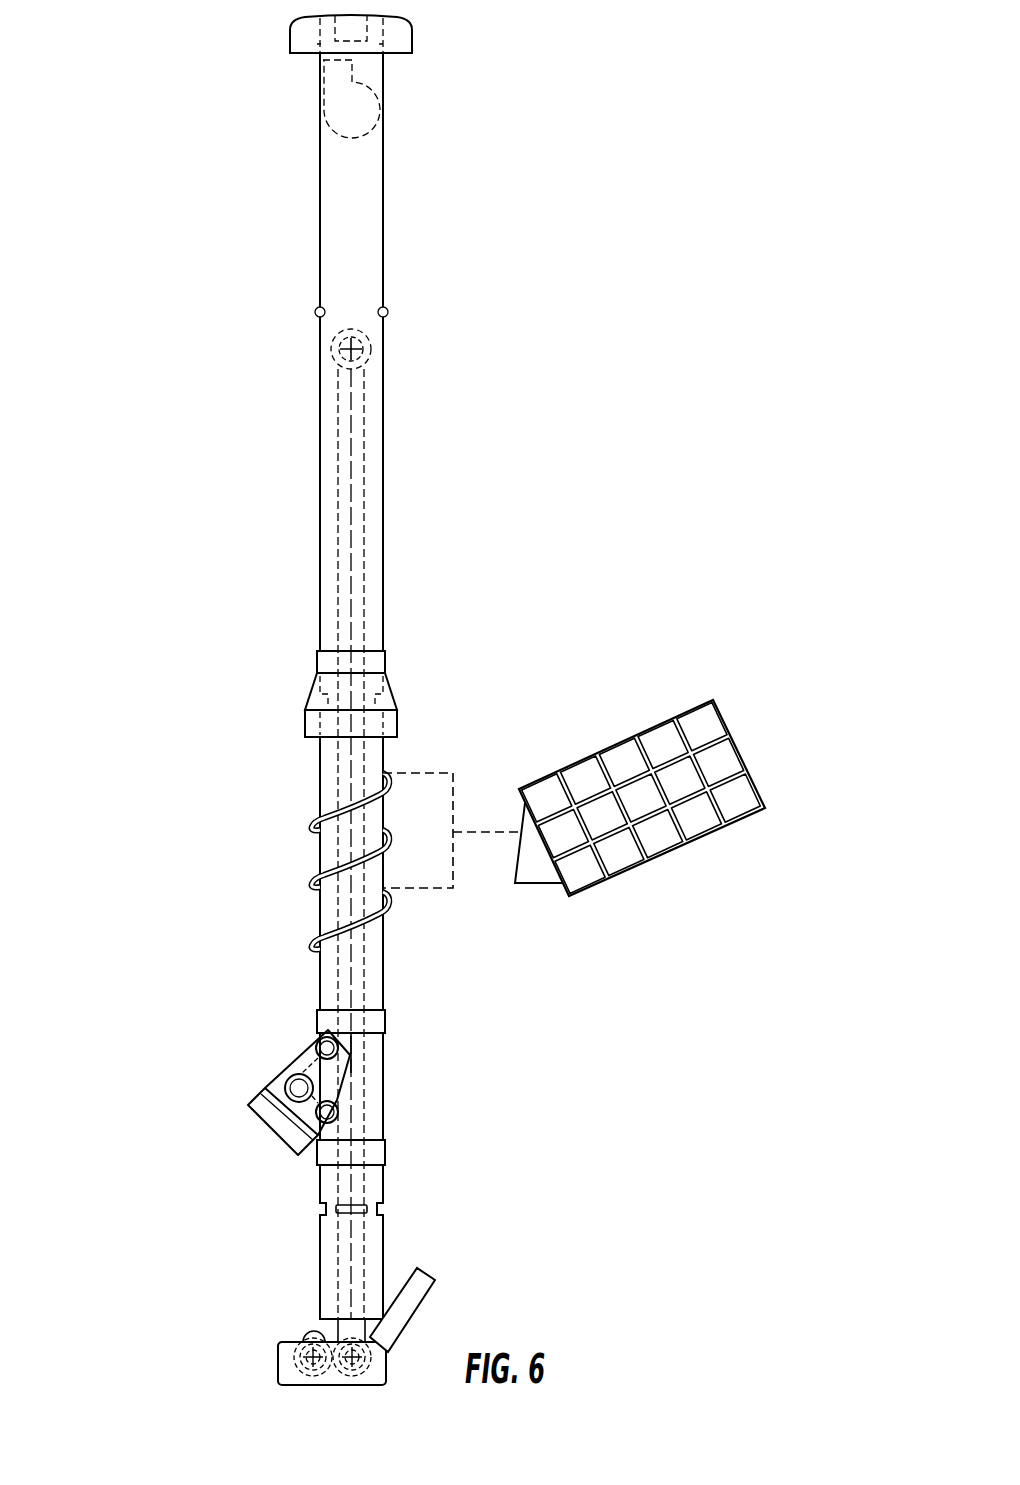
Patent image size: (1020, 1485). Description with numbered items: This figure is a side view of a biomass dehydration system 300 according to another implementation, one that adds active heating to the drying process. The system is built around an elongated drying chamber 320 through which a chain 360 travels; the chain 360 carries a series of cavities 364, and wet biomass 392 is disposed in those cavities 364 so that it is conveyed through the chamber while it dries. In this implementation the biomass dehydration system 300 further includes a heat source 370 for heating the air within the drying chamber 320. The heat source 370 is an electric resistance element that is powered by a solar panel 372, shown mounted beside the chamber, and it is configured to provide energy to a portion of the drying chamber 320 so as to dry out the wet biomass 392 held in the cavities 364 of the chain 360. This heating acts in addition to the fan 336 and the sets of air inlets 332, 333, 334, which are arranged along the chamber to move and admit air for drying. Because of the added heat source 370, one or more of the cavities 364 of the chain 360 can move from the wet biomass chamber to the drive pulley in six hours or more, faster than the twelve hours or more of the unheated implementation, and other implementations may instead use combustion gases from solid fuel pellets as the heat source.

The biomass dehydration system 300 is at (163, 149).
The drying chamber 320 is at (385, 390).
The set of air inlets 332 is at (397, 36).
The set of air inlets 333 is at (377, 703).
The set of air inlets 334 is at (382, 1212).
The fan 336 is at (365, 117).
The chain 360 is at (384, 1185).
The cavities 364 is at (365, 1124).
The heat source 370 is at (389, 776).
The solar panel 372 is at (728, 750).
The wet biomass 392 is at (288, 1343).